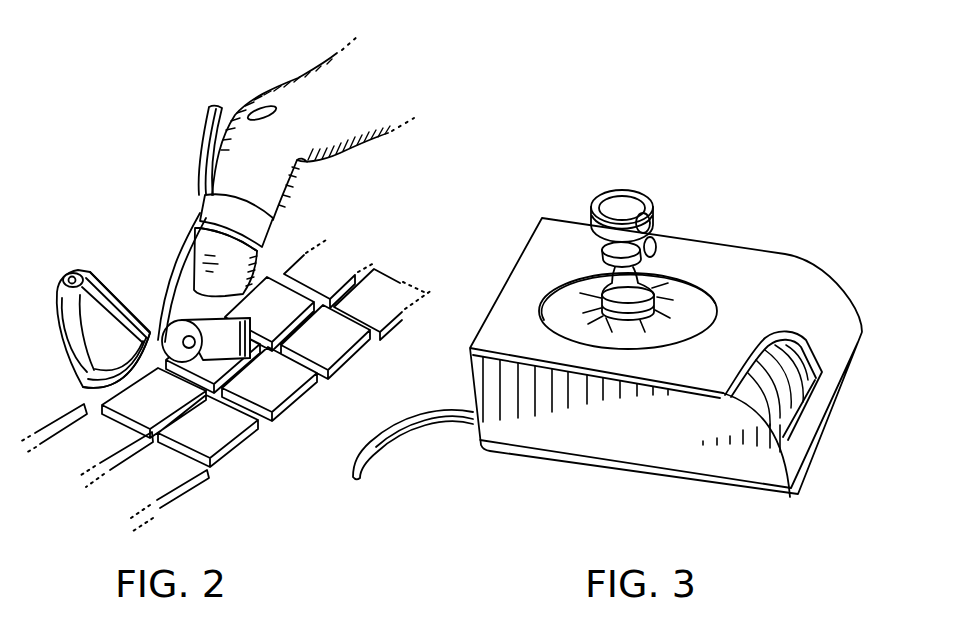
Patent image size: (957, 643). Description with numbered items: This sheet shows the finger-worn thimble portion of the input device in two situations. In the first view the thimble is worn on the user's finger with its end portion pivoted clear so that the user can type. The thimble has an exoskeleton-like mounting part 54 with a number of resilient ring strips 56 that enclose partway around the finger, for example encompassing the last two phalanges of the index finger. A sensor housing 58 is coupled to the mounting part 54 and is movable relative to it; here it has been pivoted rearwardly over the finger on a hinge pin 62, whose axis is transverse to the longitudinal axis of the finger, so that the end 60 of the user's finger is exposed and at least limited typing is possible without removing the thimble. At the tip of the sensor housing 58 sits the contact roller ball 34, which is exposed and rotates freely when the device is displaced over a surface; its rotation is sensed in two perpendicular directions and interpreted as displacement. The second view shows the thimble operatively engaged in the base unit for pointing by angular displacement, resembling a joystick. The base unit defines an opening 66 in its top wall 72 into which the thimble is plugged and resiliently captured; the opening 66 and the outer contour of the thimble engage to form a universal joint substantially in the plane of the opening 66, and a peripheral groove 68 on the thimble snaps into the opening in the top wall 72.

In FIG. 2, the contact roller ball 34 is at (72, 277).
In FIG. 2, the mounting part 54 is at (183, 250).
In FIG. 2, the ring strips 56 is at (278, 225).
In FIG. 2, the sensor housing 58 is at (75, 342).
In FIG. 2, the end of the user's finger 60 is at (247, 359).
In FIG. 2, the hinge pin 62 is at (183, 348).
In FIG. 3, the opening 66 is at (665, 300).
In FIG. 2, the peripheral groove 68 is at (80, 380).
In FIG. 3, the top wall 72 is at (523, 262).